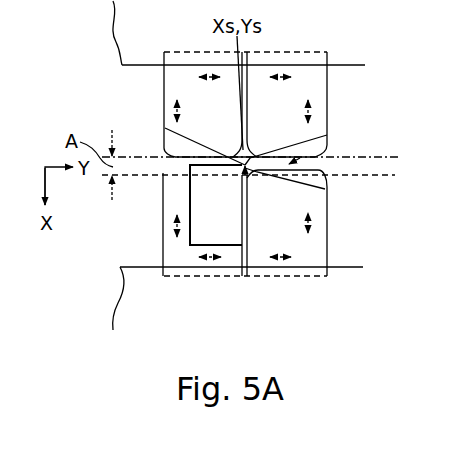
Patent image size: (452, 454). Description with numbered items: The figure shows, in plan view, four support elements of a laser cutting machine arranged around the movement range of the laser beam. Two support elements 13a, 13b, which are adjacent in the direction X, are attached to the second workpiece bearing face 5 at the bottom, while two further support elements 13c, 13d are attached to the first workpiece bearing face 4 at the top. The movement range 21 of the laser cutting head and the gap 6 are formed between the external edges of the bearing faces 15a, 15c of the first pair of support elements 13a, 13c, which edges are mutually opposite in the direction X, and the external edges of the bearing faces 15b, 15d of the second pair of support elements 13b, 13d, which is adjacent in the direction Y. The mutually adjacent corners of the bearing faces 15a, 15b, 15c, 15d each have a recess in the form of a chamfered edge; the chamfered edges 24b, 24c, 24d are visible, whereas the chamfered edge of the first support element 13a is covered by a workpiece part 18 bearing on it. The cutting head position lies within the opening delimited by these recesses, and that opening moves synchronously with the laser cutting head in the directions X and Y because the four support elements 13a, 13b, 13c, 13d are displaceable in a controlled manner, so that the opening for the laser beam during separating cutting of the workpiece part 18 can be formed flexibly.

The first workpiece bearing face 4 is at (150, 13).
The second workpiece bearing face 5 is at (150, 317).
The gap 6 is at (355, 157).
The movement range 21 is at (345, 175).
The first support element 13a is at (157, 222).
The second support element 13b is at (337, 218).
The third support element 13c is at (158, 105).
The fourth support element 13d is at (337, 115).
The bearing face of first support element 15a is at (180, 252).
The bearing face of second support element 15b is at (310, 252).
The bearing face of third support element 15c is at (182, 80).
The bearing face of fourth support element 15d is at (307, 80).
The workpiece part 18 is at (200, 195).
The chamfered edge 24b is at (327, 192).
The chamfered edge 24c is at (165, 128).
The chamfered edge 24d is at (327, 135).